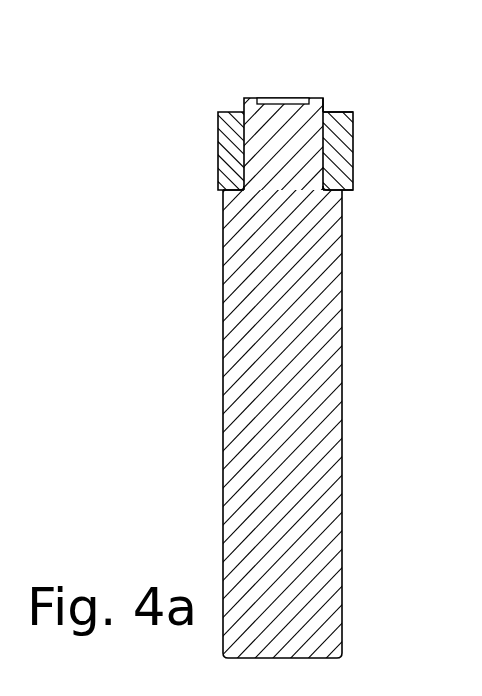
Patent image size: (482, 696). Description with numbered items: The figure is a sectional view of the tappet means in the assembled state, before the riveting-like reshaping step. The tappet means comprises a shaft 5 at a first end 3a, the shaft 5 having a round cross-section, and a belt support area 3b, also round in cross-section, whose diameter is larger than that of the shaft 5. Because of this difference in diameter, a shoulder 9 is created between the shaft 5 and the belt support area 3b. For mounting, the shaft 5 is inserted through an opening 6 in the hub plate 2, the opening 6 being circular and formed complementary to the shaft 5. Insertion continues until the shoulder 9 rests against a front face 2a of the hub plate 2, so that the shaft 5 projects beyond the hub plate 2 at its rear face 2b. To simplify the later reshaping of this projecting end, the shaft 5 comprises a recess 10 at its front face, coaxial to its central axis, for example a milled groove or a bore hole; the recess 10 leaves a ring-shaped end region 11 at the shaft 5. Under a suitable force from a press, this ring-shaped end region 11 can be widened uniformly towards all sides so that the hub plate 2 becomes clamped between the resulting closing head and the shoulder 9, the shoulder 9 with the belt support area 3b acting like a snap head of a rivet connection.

The hub plate 2 is at (342, 163).
The front face of the hub plate 2a is at (346, 191).
The rear face of the hub plate 2b is at (346, 111).
The first end of the tappet means 3a is at (209, 122).
The belt support area 3b is at (238, 389).
The shaft 5 is at (260, 121).
The opening 6 is at (309, 191).
The shoulder 9 is at (229, 189).
The recess 10 is at (272, 100).
The ring-shaped end region 11 is at (319, 99).